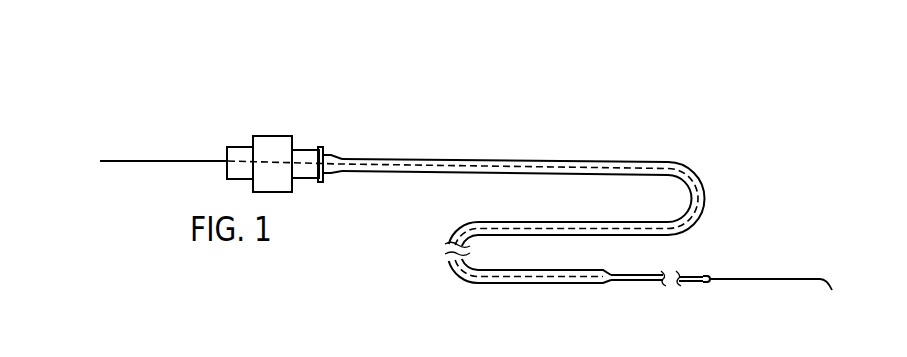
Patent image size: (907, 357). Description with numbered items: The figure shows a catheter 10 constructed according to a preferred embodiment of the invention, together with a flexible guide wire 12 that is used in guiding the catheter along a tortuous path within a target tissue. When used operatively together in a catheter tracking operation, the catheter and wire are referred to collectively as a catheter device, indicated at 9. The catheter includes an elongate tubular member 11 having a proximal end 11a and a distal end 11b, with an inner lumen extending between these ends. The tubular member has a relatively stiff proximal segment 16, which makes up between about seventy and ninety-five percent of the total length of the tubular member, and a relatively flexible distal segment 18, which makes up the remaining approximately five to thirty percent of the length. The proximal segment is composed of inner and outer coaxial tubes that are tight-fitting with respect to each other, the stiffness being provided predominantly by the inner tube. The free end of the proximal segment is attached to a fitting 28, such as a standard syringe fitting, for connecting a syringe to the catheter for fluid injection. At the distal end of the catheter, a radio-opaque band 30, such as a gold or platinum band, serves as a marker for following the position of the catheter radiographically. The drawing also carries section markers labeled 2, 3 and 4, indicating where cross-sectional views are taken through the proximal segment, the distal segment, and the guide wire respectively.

The catheter device 9 is at (224, 155).
The fitting 28 is at (268, 137).
The catheter 10 is at (536, 150).
The elongate tubular member 11 is at (690, 176).
The proximal end 11a is at (332, 155).
The distal end 11b is at (600, 272).
The proximal segment 16 is at (616, 150).
The distal segment 18 is at (630, 270).
The guide wire 12 is at (784, 279).
The radio-opaque band 30 is at (690, 288).
The section line 2- 2 is at (420, 136).
The section line 3- 3 is at (563, 290).
The section line 4- 4 is at (693, 252).